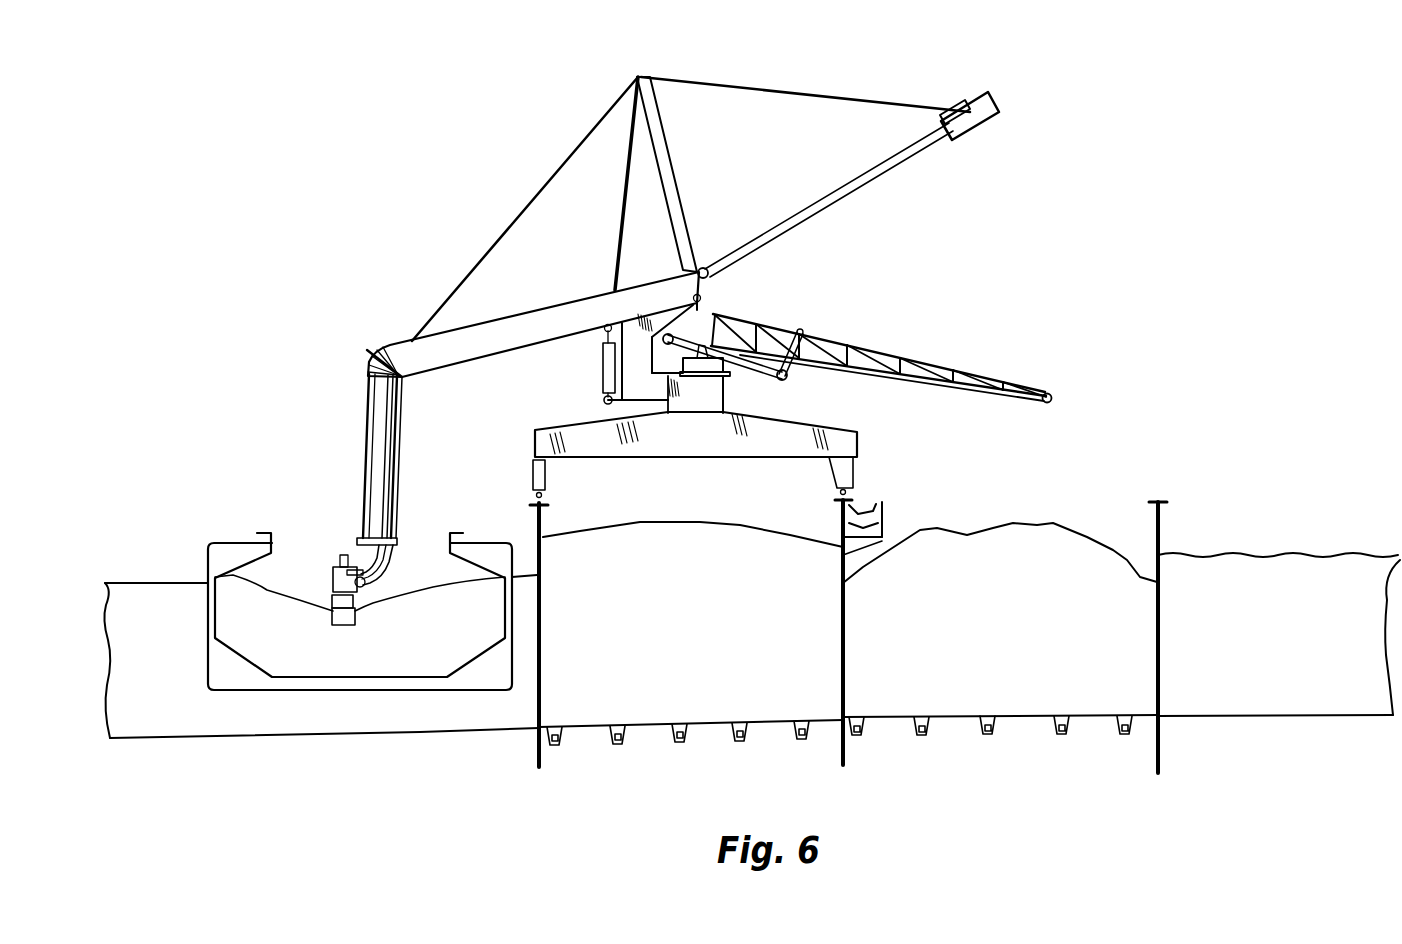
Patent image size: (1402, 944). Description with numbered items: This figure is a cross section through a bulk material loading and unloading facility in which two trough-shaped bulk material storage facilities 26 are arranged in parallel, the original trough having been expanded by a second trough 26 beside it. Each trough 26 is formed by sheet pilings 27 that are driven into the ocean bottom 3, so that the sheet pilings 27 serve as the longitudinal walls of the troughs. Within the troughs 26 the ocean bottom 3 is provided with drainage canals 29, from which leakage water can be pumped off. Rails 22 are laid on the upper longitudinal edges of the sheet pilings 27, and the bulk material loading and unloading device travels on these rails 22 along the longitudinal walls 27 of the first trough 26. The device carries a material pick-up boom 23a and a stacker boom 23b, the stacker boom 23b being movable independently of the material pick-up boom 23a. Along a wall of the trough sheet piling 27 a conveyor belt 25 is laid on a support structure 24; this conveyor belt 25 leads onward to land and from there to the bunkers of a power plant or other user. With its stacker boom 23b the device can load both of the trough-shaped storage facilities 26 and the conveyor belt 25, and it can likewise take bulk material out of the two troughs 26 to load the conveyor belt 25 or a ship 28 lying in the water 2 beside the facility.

The water 2 is at (1282, 597).
The ocean bottom 3 is at (1233, 692).
The rails 22 is at (853, 491).
The material pick-up boom 23a is at (453, 343).
The stacker boom 23b is at (873, 335).
The support structure 24 is at (887, 522).
The conveyor belt 25 is at (885, 517).
The trough-shaped bulk material storage facility 26 is at (658, 690).
The sheet pilings 27 is at (530, 522).
The ship 28 is at (213, 660).
The drainage canals 29 is at (990, 738).